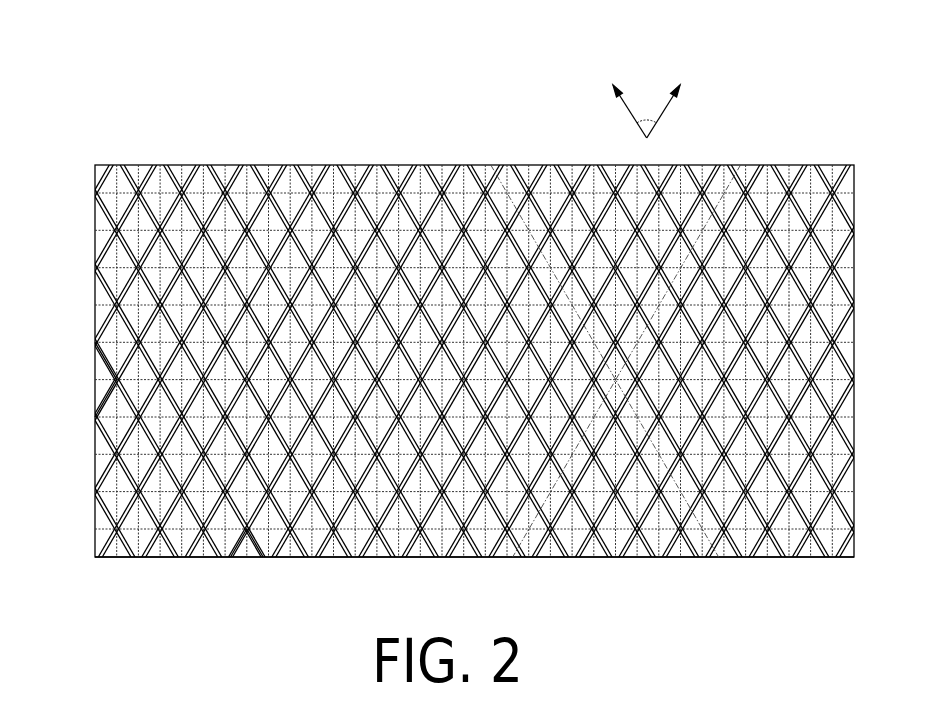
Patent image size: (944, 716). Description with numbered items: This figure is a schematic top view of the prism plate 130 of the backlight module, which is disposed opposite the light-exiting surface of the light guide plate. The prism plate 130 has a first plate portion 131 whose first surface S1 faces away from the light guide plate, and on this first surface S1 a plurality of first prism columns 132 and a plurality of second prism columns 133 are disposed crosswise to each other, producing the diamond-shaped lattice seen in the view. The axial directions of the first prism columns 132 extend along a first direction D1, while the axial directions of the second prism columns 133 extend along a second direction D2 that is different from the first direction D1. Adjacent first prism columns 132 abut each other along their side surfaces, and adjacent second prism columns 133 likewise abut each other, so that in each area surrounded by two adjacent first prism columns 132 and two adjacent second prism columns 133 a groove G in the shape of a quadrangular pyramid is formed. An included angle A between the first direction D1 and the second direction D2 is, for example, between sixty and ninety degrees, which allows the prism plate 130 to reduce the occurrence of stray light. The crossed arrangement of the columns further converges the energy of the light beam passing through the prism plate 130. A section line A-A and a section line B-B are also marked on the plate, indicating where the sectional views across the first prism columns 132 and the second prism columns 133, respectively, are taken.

The prism plate 130 is at (63, 135).
The first plate portion 131 is at (93, 220).
The first prism columns 132 is at (253, 558).
The second prism columns 133 is at (240, 558).
The groove G is at (107, 393).
The first surface S1 is at (117, 558).
The included angle A is at (490, 165).
The section line B- B is at (742, 164).
The first direction D1 is at (670, 98).
The second direction D2 is at (622, 98).